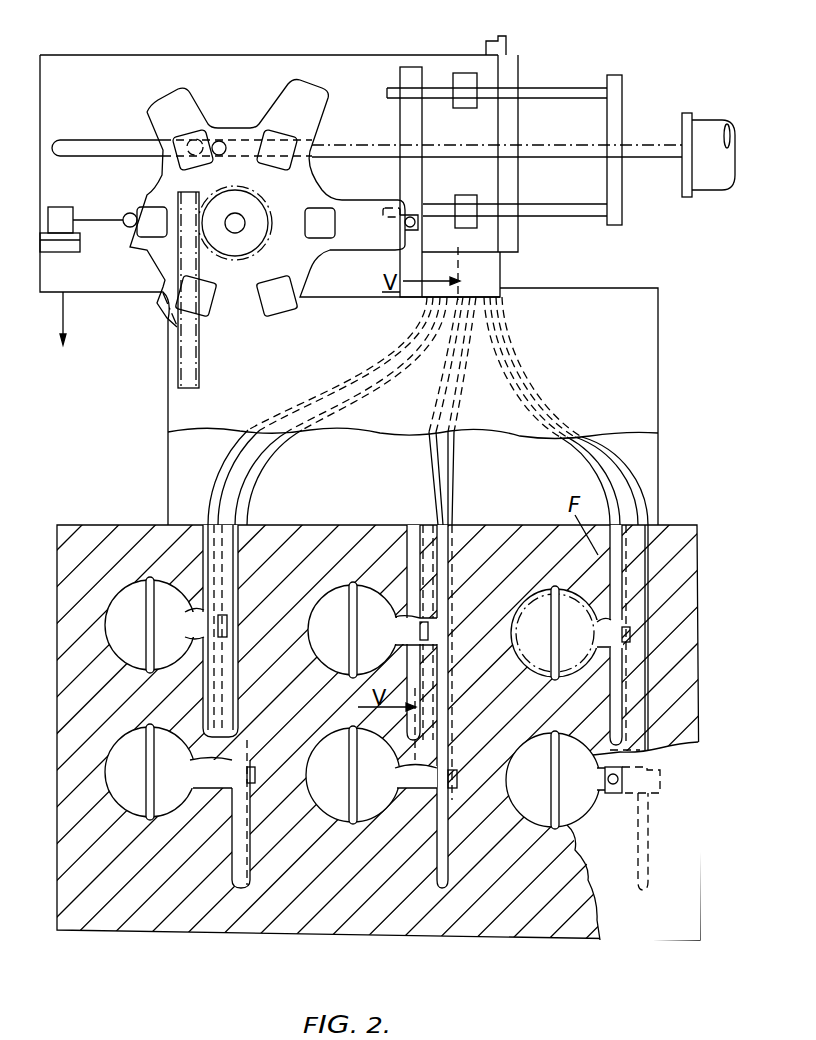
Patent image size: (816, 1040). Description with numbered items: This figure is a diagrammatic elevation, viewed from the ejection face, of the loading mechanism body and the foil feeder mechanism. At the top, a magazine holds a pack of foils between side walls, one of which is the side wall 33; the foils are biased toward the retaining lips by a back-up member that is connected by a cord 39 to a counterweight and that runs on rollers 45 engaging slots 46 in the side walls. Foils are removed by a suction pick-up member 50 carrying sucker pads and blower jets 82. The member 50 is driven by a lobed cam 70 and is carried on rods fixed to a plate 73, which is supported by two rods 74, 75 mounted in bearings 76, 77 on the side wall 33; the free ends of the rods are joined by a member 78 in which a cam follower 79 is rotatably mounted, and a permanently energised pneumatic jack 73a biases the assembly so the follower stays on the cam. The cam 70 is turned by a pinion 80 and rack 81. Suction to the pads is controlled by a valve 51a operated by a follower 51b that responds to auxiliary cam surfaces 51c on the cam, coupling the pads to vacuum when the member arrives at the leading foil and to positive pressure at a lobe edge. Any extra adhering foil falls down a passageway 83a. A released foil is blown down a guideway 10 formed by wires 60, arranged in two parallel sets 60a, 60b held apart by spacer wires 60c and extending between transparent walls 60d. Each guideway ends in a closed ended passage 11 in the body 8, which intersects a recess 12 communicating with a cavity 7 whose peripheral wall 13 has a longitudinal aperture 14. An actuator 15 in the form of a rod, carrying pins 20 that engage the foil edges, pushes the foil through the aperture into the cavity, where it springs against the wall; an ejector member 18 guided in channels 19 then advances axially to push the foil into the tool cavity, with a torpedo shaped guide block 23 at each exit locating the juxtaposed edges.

The guide body cavity 7 is at (105, 778).
The body 8 is at (95, 935).
The guideway 10 is at (452, 462).
The closed ended passage 11 is at (262, 545).
The recess 12 is at (400, 580).
The peripheral wall 13 is at (340, 580).
The aperture 14 is at (198, 770).
The actuator 15 is at (410, 630).
The ejector member 18 is at (146, 608).
The channels 19 is at (150, 578).
The pins 20 is at (397, 770).
The guide block 23 is at (600, 780).
The side wall 33 is at (104, 284).
The cord 39 is at (70, 318).
The rollers 45 is at (224, 138).
The slots 46 is at (128, 140).
The suction pick-up member 50 is at (515, 232).
The valve 51a is at (52, 207).
The follower 51b is at (108, 205).
The auxiliary cam surfaces 51c is at (335, 215).
The wires 60 is at (224, 480).
The first set of wires 60a is at (518, 402).
The second set of wires 60b is at (512, 395).
The spacer wires 60c is at (322, 396).
The walls 60d is at (645, 305).
The lobed cam 70 is at (330, 94).
The plate 73 is at (615, 195).
The pneumatic jack 73a is at (712, 120).
The rod 74 is at (570, 90).
The rod 75 is at (575, 218).
The bearing 76 is at (462, 108).
The bearing 77 is at (460, 196).
The member 78 is at (415, 128).
The cam follower 79 is at (410, 230).
The pinion 80 is at (268, 207).
The rack 81 is at (190, 270).
The blower jets 82 is at (486, 46).
The passageway 83a is at (405, 327).